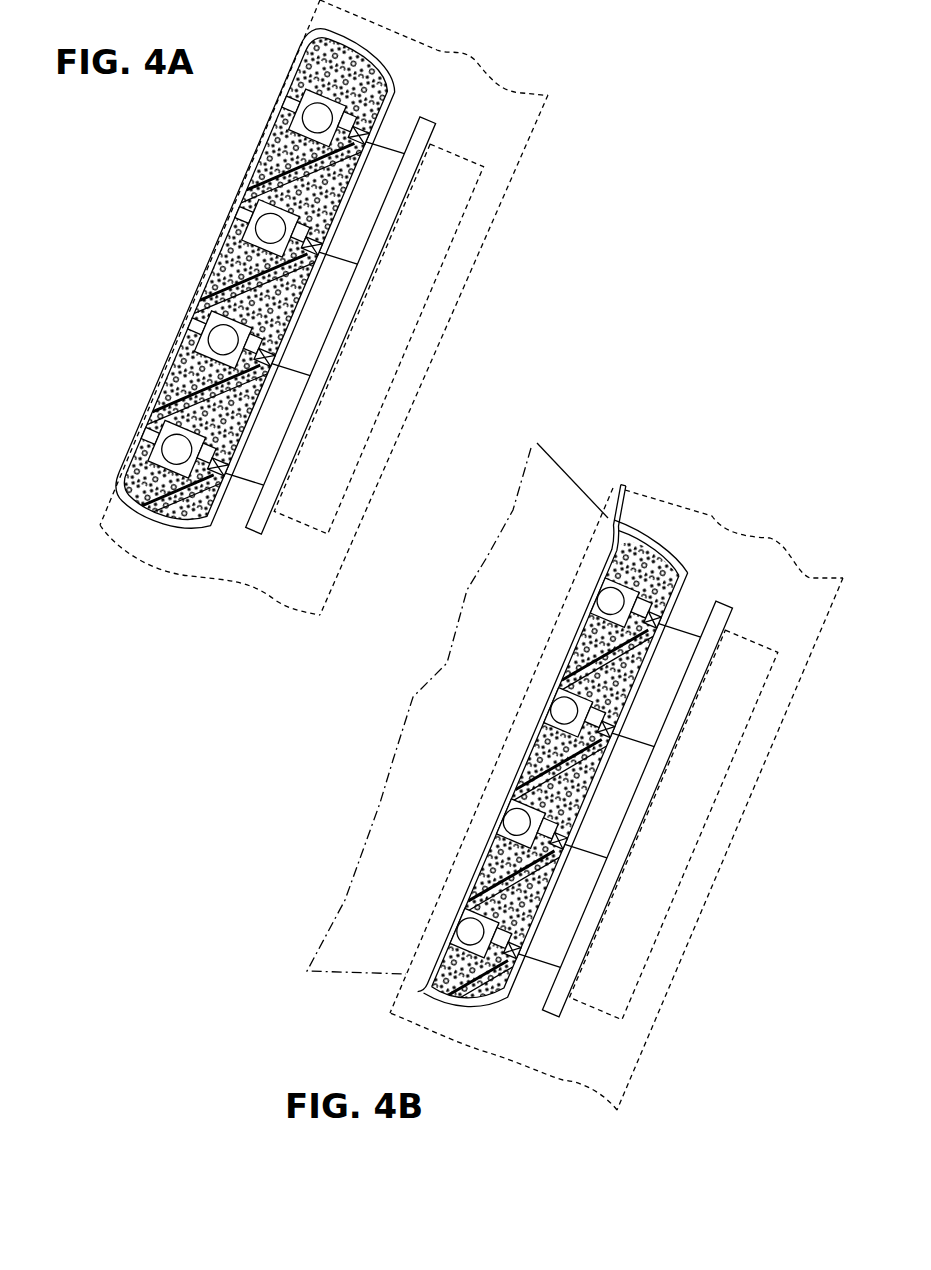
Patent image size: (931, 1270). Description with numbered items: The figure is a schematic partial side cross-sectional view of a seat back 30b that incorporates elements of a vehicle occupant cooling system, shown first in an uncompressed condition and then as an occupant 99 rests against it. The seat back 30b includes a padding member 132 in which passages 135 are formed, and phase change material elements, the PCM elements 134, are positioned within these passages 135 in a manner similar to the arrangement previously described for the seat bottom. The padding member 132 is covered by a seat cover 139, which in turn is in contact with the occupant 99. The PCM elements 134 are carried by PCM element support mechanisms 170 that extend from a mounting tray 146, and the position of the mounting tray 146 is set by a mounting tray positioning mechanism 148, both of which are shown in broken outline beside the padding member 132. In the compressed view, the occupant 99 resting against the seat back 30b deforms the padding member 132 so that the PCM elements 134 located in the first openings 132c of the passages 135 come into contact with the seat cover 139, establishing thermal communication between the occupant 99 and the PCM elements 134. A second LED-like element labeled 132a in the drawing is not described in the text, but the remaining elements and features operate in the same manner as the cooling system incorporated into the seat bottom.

In FIG. 4A, the seat back 30b is at (457, 50).
In FIG. 4B, the seat back 30b is at (731, 532).
In FIG. 4B, the occupant 99 is at (575, 490).
In FIG. 4A, the padding member 132 is at (277, 140).
In FIG. 4A, the light emitting diode 132a is at (227, 238).
In FIG. 4B, the first openings 132c is at (596, 590).
In FIG. 4A, the PCM elements 134 is at (152, 437).
In FIG. 4B, the PCM elements 134 is at (468, 920).
In FIG. 4A, the passages 135 is at (250, 205).
In FIG. 4B, the passages 135 is at (580, 687).
In FIG. 4A, the seat cover 139 is at (282, 110).
In FIG. 4B, the seat cover 139 is at (518, 781).
In FIG. 4A, the mounting tray 146 is at (350, 307).
In FIG. 4B, the mounting tray 146 is at (667, 763).
In FIG. 4A, the mounting tray positioning mechanism 148 is at (437, 220).
In FIG. 4B, the mounting tray positioning mechanism 148 is at (680, 920).
In FIG. 4A, the PCM element support mechanisms 170 is at (402, 149).
In FIG. 4B, the PCM element support mechanisms 170 is at (663, 623).